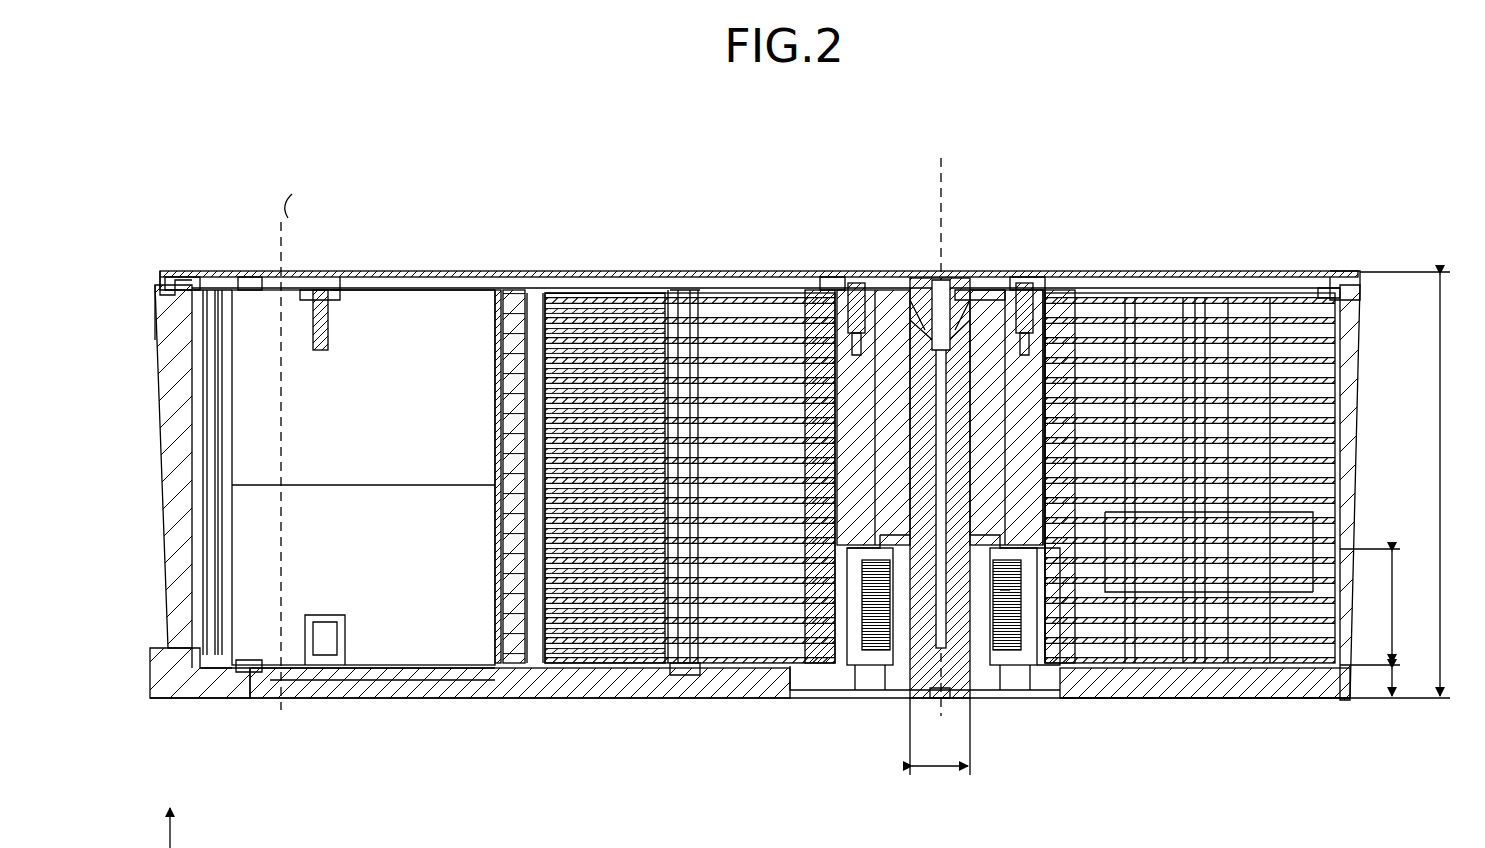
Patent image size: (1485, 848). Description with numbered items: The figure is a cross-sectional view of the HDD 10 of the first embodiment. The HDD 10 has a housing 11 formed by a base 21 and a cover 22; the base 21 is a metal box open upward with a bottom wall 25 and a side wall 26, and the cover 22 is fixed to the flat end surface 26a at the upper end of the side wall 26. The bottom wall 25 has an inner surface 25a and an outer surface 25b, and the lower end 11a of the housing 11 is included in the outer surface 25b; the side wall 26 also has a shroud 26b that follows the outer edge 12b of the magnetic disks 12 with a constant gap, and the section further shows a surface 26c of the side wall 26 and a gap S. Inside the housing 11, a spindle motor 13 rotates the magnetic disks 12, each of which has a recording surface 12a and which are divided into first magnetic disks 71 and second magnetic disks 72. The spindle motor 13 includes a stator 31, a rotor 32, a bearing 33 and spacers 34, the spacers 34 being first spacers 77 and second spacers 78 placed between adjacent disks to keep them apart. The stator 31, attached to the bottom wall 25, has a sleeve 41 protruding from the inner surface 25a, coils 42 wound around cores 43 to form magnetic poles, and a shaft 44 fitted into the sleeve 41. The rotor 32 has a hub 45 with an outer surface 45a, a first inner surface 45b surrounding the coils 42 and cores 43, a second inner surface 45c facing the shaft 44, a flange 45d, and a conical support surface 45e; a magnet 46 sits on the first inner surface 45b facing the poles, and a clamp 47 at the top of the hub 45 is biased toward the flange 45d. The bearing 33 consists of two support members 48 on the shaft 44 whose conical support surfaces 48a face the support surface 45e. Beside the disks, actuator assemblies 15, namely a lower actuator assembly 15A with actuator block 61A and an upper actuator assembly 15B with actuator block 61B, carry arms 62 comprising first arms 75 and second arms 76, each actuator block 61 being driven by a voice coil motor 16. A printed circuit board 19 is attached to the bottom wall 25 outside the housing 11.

The HDD 10 is at (170, 134).
The housing 11 is at (226, 266).
The end of the housing 11a is at (1328, 700).
The magnetic disk 12 is at (727, 491).
The recording surface 12a is at (696, 300).
The outer edge 12b is at (1352, 283).
The spindle motor 13 is at (1060, 247).
The actuator assembly 15 is at (507, 479).
The actuator assembly 15A is at (470, 283).
The actuator assembly 15B is at (507, 479).
The voice coil motor 16 is at (258, 283).
The printed circuit board 19 is at (330, 690).
The base 21 is at (1190, 551).
The cover 22 is at (175, 280).
The bottom wall 25 is at (1100, 682).
The inner surface 25a is at (1190, 655).
The outer surface 25b is at (1160, 700).
The side wall 26 is at (172, 436).
The end surface 26a is at (178, 286).
The shroud 26b is at (1332, 290).
The side wall outer surface 26c is at (156, 360).
The stator 31 is at (1008, 702).
The rotor 32 is at (1032, 274).
The bearing 33 is at (940, 475).
The spacer 34 is at (802, 478).
The sleeve 41 is at (975, 680).
The coil 42 is at (1018, 630).
The core 43 is at (1050, 590).
The shaft 44 is at (965, 300).
The hub 45 is at (1105, 345).
The outer surface 45a is at (1070, 420).
The first inner surface 45b is at (855, 680).
The second inner surface 45c is at (920, 320).
The flange 45d is at (870, 552).
The support surface 45e is at (985, 300).
The magnet 46 is at (873, 680).
The clamp 47 is at (830, 290).
The support member 48 is at (887, 300).
The support surface 48a is at (1040, 560).
The actuator block 61 is at (363, 477).
The actuator block 61A is at (427, 300).
The actuator block 61B is at (363, 477).
The arm 62 is at (690, 474).
The first magnetic disk 71 is at (742, 300).
The second magnetic disk 72 is at (727, 491).
The first arm 75 is at (580, 300).
The second arm 76 is at (690, 474).
The first spacer 77 is at (798, 300).
The second spacer 78 is at (802, 478).
The gap S is at (210, 288).